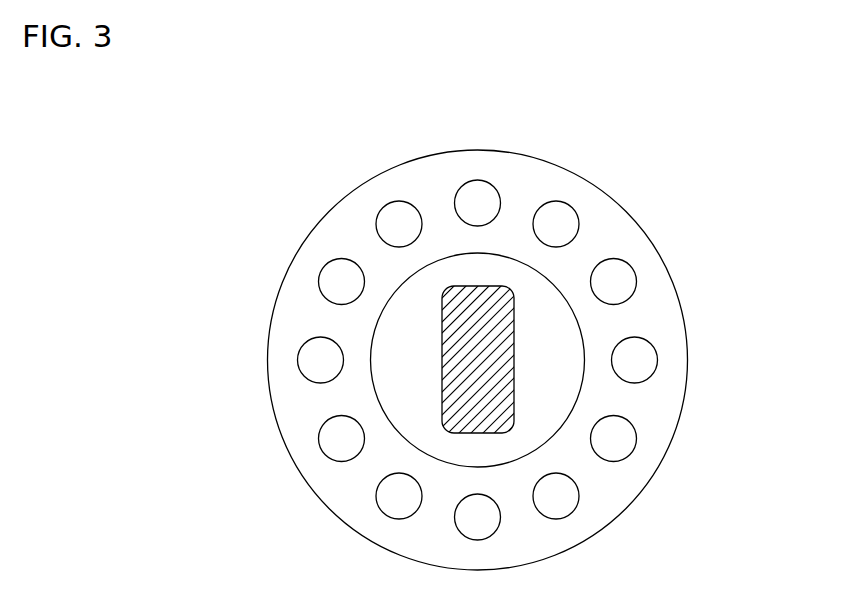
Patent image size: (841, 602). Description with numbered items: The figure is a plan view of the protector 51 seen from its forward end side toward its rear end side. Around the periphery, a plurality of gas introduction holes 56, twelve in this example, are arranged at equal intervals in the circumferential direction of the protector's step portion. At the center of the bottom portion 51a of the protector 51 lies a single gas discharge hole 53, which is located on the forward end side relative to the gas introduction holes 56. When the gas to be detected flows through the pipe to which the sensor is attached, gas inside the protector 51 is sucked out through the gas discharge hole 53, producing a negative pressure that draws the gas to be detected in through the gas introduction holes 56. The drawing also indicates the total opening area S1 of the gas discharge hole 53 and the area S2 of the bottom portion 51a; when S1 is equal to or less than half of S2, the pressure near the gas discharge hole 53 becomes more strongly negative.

The protector 51 is at (655, 230).
The bottom portion 51a is at (563, 325).
The gas discharge hole 53 is at (497, 396).
The gas introduction holes 56 is at (501, 198).
The total opening area of the gas discharge hole S1 is at (435, 287).
The area of the bottom portion S2 is at (373, 252).